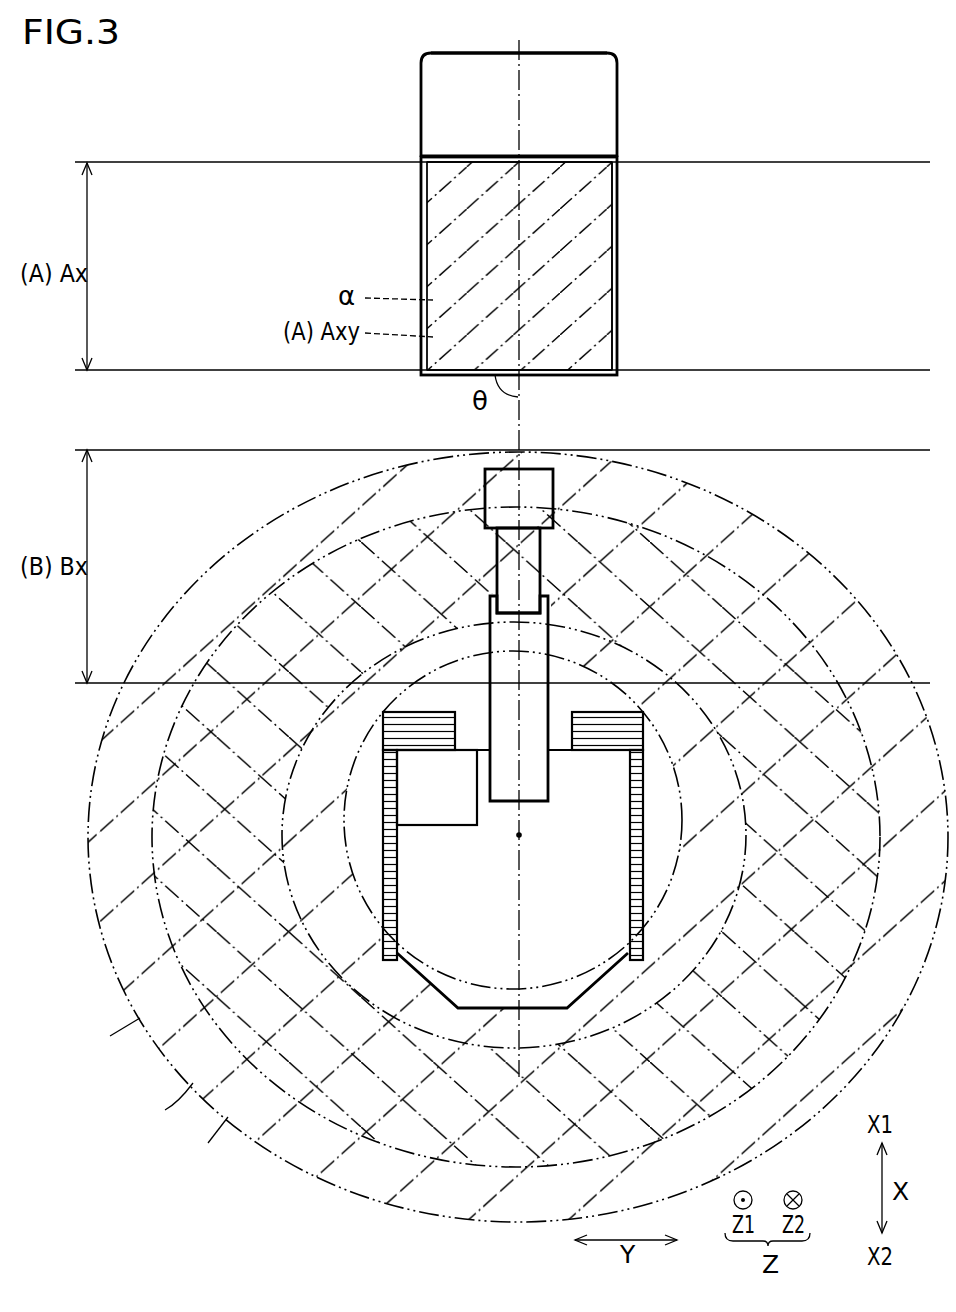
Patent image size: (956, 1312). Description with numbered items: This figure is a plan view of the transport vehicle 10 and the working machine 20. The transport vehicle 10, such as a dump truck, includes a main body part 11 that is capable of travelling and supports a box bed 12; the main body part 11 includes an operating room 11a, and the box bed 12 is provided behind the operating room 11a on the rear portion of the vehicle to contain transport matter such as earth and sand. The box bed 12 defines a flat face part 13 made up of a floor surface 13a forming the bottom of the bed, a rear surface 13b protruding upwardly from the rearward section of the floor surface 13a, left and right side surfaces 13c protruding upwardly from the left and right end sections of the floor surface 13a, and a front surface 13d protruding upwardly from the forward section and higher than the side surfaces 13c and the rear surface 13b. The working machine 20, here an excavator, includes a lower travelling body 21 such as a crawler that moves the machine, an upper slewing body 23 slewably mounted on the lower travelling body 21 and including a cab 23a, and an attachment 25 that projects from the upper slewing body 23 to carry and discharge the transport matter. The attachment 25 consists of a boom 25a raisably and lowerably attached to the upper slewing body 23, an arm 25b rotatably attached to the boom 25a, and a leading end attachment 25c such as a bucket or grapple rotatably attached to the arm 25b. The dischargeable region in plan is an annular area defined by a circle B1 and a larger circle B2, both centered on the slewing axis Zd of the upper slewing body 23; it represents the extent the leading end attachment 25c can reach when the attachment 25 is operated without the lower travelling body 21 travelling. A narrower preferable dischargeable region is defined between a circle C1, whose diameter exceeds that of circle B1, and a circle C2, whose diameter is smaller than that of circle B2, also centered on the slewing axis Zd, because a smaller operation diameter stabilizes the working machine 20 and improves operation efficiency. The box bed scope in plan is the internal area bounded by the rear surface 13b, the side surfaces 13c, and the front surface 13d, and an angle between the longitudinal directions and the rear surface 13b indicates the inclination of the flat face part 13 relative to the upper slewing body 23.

The transport vehicle 10 is at (575, 229).
The main body part 11 is at (440, 105).
The operating room 11a is at (432, 91).
The box bed 12 is at (400, 197).
The flat face part 13 is at (517, 284).
The floor surface 13a is at (603, 308).
The rear surface 13b is at (603, 373).
The side surfaces 13c is at (433, 218).
The front surface 13d is at (603, 173).
The working machine 20 is at (478, 656).
The lower travelling body 21 is at (640, 720).
The upper slewing body 23 is at (513, 899).
The cab 23a is at (447, 825).
The attachment 25 is at (512, 674).
The boom 25a is at (543, 773).
The arm 25b is at (510, 572).
The leading end attachment 25c is at (495, 493).
The circle B1 is at (677, 877).
The circle B2 is at (868, 1044).
The circle C1 is at (290, 790).
The circle C2 is at (160, 767).
The slewing axis Zd is at (501, 841).